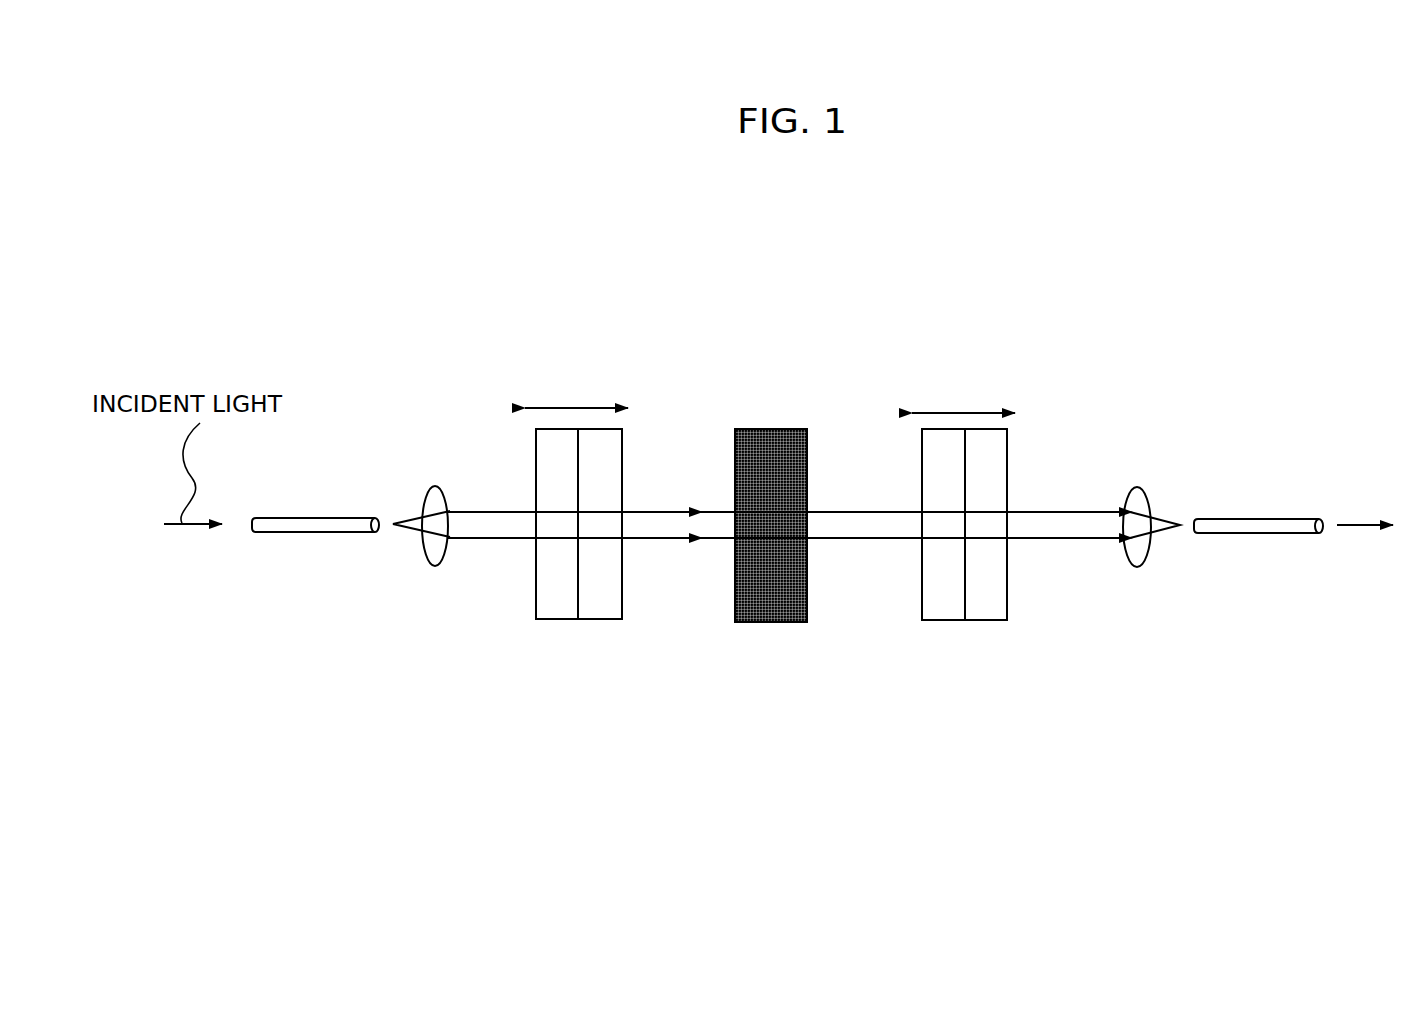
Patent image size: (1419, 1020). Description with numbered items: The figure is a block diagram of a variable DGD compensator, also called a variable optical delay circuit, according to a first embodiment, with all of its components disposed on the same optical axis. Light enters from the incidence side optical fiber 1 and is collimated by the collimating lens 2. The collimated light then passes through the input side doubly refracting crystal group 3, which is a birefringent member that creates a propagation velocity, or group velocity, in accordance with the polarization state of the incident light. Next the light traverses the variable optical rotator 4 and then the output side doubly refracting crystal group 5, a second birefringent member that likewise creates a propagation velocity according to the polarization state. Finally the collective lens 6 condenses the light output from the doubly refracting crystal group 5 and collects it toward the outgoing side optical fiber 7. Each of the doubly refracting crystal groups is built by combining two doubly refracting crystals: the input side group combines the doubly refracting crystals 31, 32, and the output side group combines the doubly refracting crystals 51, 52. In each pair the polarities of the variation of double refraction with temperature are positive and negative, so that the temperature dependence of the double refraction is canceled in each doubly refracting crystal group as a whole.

The incidence side optical fiber 1 is at (310, 533).
The collimating lens 2 is at (435, 486).
The input side doubly refracting crystal group 3 is at (577, 549).
The doubly refracting crystal 31 is at (543, 590).
The doubly refracting crystal 32 is at (641, 538).
The variable optical rotator 4 is at (805, 395).
The output side doubly refracting crystal group 5 is at (961, 555).
The doubly refracting crystal 51 is at (932, 597).
The doubly refracting crystal 52 is at (1029, 542).
The collective lens 6 is at (1137, 487).
The outgoing side optical fiber 7 is at (1253, 534).